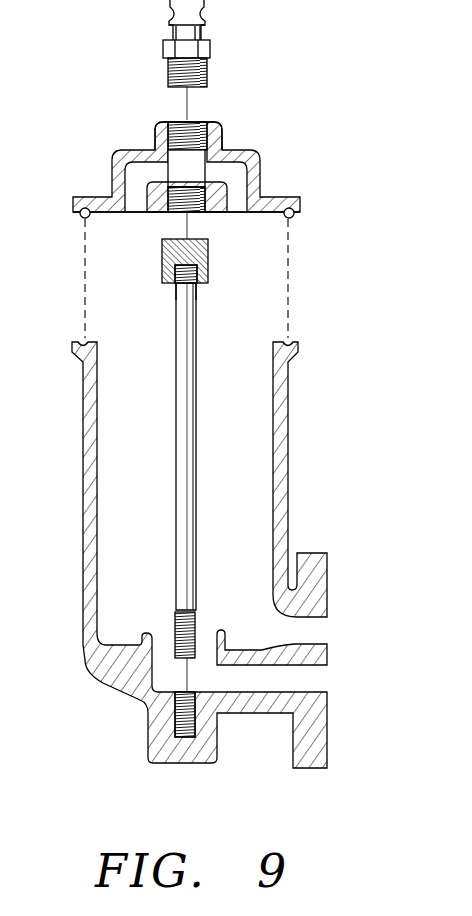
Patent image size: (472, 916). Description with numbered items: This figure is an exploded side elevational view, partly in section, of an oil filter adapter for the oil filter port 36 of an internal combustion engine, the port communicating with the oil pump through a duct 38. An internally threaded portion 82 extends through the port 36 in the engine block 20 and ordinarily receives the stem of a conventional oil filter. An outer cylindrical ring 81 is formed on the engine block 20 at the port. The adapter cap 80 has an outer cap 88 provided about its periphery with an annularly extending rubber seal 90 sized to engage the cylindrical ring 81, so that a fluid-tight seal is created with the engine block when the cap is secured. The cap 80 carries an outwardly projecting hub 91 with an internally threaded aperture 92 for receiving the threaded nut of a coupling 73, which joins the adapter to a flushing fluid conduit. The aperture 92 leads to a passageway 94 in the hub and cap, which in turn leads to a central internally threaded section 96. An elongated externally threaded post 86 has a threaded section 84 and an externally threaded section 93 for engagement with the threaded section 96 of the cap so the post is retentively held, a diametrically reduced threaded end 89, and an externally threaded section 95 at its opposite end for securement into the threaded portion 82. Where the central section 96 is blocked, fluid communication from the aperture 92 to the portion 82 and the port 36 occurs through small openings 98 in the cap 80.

The coupling 73 is at (211, 48).
The adapter cap 80 is at (169, 175).
The outer cylindrical ring 81 is at (221, 555).
The internally threaded portion 82 is at (190, 700).
The threaded section 84 is at (162, 256).
The externally threaded post 86 is at (175, 482).
The outer cap 88 is at (262, 180).
The diametrically reduced threaded end 89 is at (168, 284).
The rubber seal 90 is at (75, 199).
The outwardly projecting hub 91 is at (223, 136).
The internally threaded aperture 92 is at (203, 122).
The externally threaded section 93 is at (208, 282).
The passageway 94 is at (182, 168).
The externally threaded section 95 is at (176, 618).
The internally threaded section 96 is at (177, 214).
The small openings 98 is at (238, 213).
The engine block 20 is at (328, 578).
The oil filter port 36 is at (343, 648).
The duct 38 is at (323, 681).